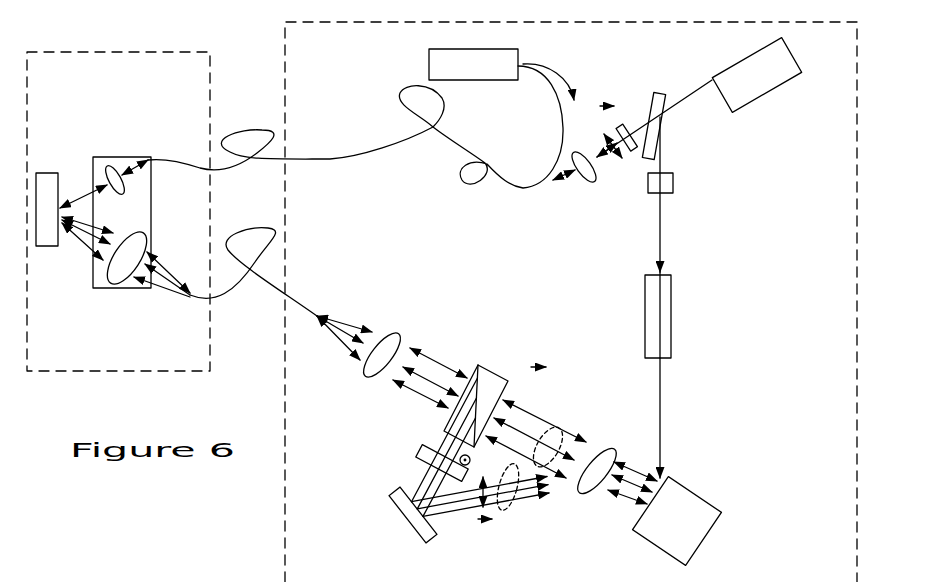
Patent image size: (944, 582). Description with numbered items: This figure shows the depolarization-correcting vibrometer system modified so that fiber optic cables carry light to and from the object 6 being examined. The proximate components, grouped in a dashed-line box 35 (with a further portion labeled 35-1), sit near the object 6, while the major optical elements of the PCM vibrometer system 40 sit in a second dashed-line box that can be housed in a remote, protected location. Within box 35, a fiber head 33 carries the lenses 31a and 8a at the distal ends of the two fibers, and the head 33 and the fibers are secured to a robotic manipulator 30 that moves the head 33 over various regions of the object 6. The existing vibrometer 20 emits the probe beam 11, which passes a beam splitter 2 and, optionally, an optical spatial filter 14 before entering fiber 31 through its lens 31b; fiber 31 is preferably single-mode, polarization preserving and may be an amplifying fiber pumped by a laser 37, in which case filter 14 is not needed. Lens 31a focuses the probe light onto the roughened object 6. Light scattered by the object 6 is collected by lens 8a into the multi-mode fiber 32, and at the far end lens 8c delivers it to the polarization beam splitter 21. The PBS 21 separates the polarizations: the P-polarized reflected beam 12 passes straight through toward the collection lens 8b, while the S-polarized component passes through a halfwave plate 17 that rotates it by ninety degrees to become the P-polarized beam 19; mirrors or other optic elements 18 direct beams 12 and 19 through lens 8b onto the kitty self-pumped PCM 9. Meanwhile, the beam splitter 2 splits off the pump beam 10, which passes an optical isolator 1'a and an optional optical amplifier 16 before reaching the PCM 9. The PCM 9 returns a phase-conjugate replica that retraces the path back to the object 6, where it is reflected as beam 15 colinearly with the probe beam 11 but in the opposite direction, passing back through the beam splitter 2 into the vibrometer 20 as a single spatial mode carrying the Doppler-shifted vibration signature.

The proximate components 35 is at (108, 52).
The receiver assembly portion 35-1 is at (97, 576).
The object 6 is at (52, 185).
The fiber head 33 is at (123, 224).
The lens 31a is at (110, 170).
The lens 8a is at (140, 237).
The robotic manipulator 30 is at (146, 275).
The fiber optic cable 32 is at (277, 293).
The PCM vibrometer system 40 is at (285, 50).
The laser 37 is at (429, 62).
The fiber optic cable 31 is at (503, 122).
The lens 31b is at (580, 178).
The probe beam 11 is at (637, 131).
The phase-conjugate replica beam 15 is at (635, 128).
The optical spatial filter 14 is at (632, 150).
The beam splitter 2 is at (657, 137).
The vibrometer 20 is at (758, 90).
The optical isolator 1'a is at (687, 182).
The pump beam 10 is at (663, 245).
The optical amplifier 16 is at (665, 300).
The kitty self pumped PCM device 9 is at (685, 532).
The collection lens 8b is at (582, 490).
The lens 8c is at (367, 375).
The polarization beam splitter 21 is at (488, 375).
The reflected beam 12 is at (558, 427).
The halfwave plate 17 is at (422, 455).
The mirror 18 is at (418, 528).
The beam 19 is at (508, 512).